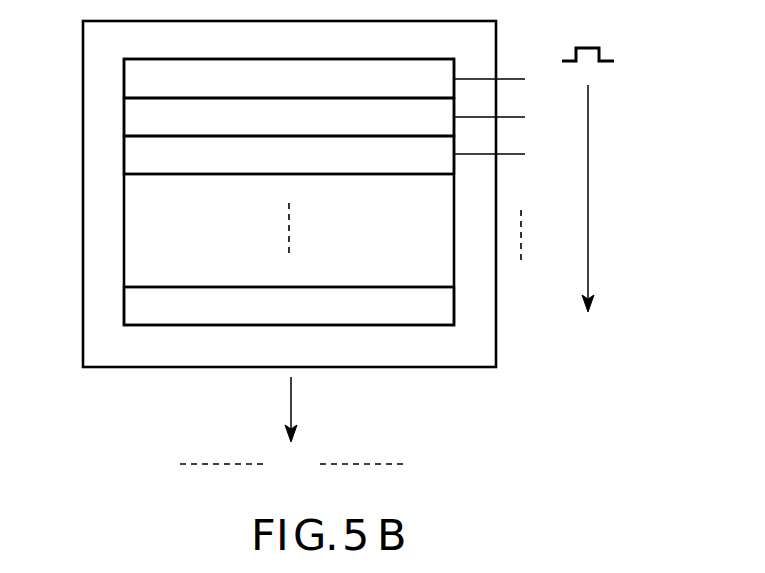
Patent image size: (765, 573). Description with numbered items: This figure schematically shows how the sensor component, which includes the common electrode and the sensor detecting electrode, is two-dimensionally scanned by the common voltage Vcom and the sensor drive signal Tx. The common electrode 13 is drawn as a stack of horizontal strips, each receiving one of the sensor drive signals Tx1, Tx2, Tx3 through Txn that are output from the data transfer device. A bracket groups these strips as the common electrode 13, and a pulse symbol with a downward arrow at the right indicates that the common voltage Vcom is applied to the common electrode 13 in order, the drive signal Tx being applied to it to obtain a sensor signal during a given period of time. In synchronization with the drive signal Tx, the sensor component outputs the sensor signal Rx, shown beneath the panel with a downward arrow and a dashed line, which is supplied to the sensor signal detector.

The common electrode 13 is at (277, 192).
The sensor drive signal Tx1 is at (324, 78).
The sensor drive signal Tx2 is at (324, 117).
The sensor drive signal Tx3 is at (324, 155).
The sensor drive signal Txn is at (289, 306).
The sensor signal Rx is at (291, 427).